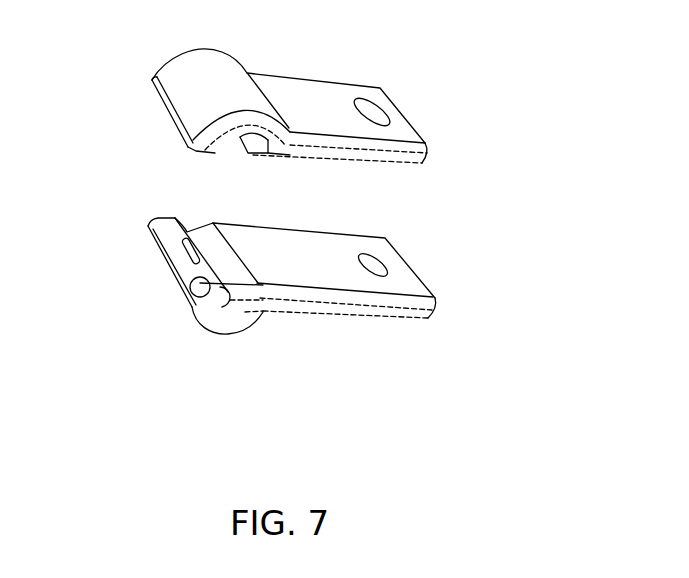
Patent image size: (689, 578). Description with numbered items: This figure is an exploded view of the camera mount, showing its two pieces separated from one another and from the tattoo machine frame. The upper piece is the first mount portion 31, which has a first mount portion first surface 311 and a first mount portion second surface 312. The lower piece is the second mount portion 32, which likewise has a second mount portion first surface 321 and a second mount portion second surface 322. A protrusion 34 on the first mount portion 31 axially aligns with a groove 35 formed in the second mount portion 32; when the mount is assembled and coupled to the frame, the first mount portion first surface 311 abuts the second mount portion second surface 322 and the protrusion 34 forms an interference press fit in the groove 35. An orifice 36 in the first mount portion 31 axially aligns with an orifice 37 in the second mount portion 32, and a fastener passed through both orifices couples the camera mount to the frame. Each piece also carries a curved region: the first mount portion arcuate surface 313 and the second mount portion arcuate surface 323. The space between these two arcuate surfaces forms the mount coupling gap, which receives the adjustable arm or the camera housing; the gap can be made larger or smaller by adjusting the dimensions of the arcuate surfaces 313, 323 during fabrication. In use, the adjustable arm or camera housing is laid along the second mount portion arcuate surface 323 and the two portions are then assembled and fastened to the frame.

The first mount portion 31 is at (203, 75).
The first mount portion first surface 311 is at (390, 163).
The first mount portion second surface 312 is at (308, 97).
The first mount portion arcuate surface 313 is at (243, 140).
The protrusion 34 is at (172, 128).
The orifice 36 is at (372, 114).
The second mount portion 32 is at (198, 315).
The second mount portion first surface 321 is at (373, 317).
The second mount portion second surface 322 is at (312, 268).
The second mount portion arcuate surface 323 is at (237, 292).
The groove 35 is at (192, 257).
The orifice 37 is at (380, 265).